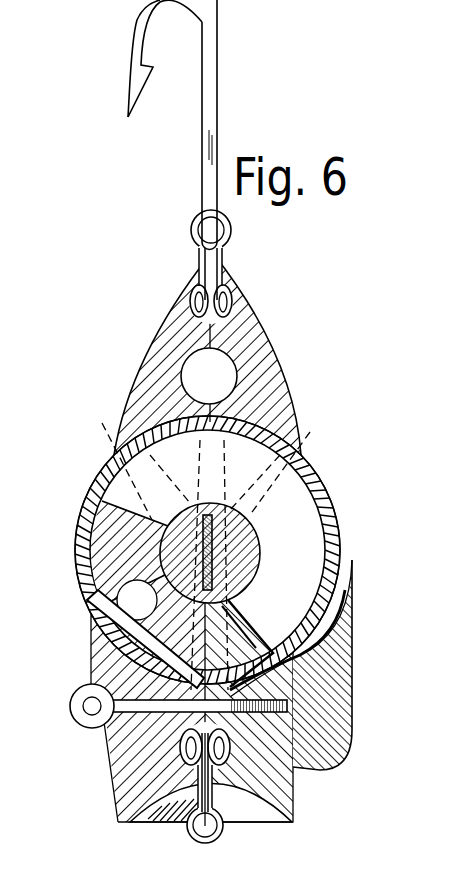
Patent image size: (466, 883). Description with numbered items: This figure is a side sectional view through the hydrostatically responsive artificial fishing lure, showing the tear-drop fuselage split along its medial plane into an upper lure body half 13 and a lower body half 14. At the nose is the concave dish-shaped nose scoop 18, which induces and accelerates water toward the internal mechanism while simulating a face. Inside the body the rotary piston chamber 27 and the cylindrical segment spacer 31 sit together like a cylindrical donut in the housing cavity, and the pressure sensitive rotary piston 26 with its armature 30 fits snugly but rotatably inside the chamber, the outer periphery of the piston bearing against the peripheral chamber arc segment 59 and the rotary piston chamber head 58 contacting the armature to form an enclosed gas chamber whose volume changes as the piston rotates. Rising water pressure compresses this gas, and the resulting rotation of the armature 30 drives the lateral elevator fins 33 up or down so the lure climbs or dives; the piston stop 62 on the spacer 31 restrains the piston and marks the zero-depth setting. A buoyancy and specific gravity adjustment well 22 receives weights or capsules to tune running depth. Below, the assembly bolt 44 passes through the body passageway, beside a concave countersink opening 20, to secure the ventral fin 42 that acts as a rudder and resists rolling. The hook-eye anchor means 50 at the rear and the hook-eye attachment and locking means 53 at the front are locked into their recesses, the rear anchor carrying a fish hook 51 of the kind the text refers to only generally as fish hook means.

The upper lure body half 13 is at (142, 378).
The lower body half 14 is at (283, 366).
The nose scoop 18 is at (230, 818).
The concave countersink opening 20 is at (92, 682).
The buoyancy and specific gravity adjustment well 22 is at (227, 391).
The rotary piston 26 is at (146, 562).
The rotary piston chamber 27 is at (309, 547).
The armature 30 is at (259, 561).
The cylindrical segment spacer 31 is at (76, 553).
The lateral elevator fins 33 is at (102, 423).
The ventral fin 42 is at (318, 772).
The assembly bolt 44 is at (70, 703).
The hook-eye anchor means 50 is at (197, 217).
The hook 51 is at (206, 40).
The hook-eye attachment and locking means 53 is at (197, 836).
The rotary piston chamber head 58 is at (234, 620).
The peripheral chamber arc segment 59 is at (325, 495).
The piston stop 62 is at (86, 598).